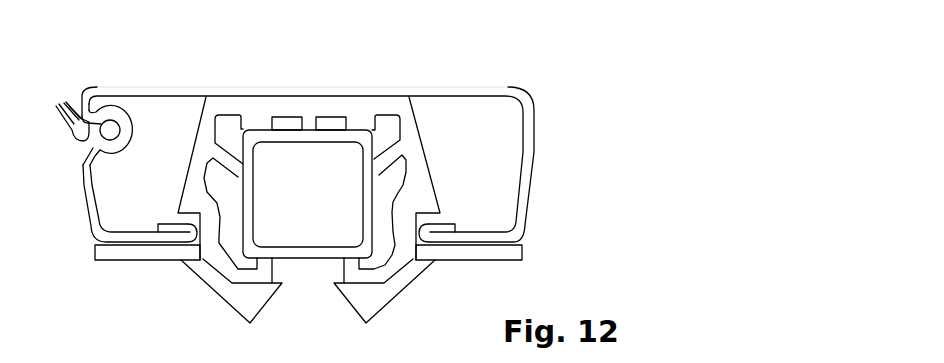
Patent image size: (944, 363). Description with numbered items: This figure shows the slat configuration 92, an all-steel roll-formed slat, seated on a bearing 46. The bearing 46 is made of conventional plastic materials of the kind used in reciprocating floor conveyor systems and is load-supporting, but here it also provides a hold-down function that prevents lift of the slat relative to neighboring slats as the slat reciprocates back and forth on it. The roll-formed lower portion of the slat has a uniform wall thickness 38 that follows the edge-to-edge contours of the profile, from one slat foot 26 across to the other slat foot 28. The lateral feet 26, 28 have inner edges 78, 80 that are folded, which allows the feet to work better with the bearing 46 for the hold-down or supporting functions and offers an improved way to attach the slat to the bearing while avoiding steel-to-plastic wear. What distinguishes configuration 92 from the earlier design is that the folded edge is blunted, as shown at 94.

The slat foot 26 is at (138, 238).
The slat foot 28 is at (480, 236).
The uniform wall thickness 38 is at (515, 83).
The bearing 46 is at (379, 108).
The inner edge 78 is at (169, 222).
The inner edge 80 is at (443, 228).
The slat configuration 92 is at (298, 78).
The blunted folded edge 94 is at (83, 100).